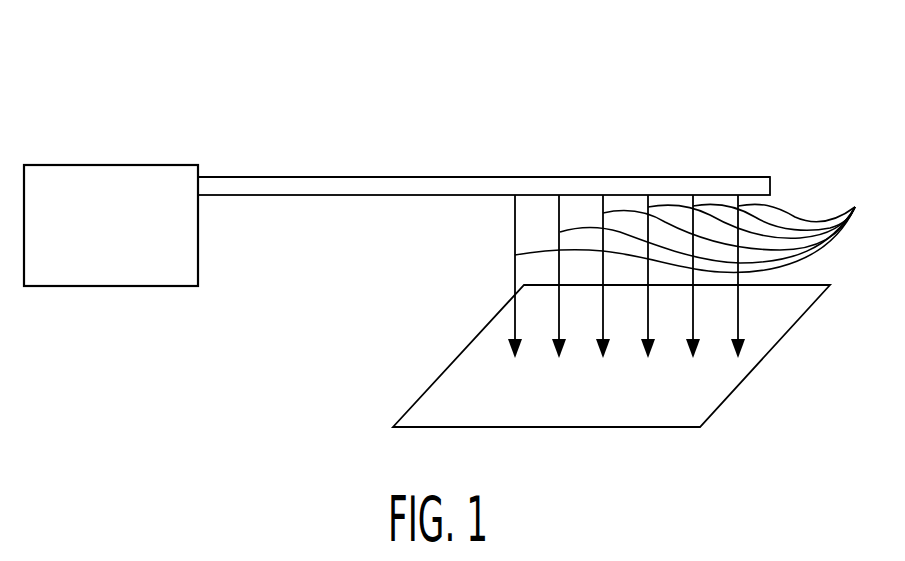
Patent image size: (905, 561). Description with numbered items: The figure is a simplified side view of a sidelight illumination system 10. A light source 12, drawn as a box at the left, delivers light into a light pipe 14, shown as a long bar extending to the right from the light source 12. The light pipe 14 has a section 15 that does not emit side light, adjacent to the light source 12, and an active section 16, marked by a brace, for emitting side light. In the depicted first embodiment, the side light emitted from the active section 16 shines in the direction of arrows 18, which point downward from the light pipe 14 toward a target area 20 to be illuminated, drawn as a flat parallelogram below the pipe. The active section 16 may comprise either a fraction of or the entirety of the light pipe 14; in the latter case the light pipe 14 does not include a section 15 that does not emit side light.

The sidelight illumination system 10 is at (268, 72).
The light source 12 is at (124, 270).
The light pipe 14 is at (419, 153).
The section that does not emit side light 15 is at (268, 177).
The active section 16 is at (752, 156).
The arrows 18 is at (691, 223).
The target area 20 is at (614, 406).